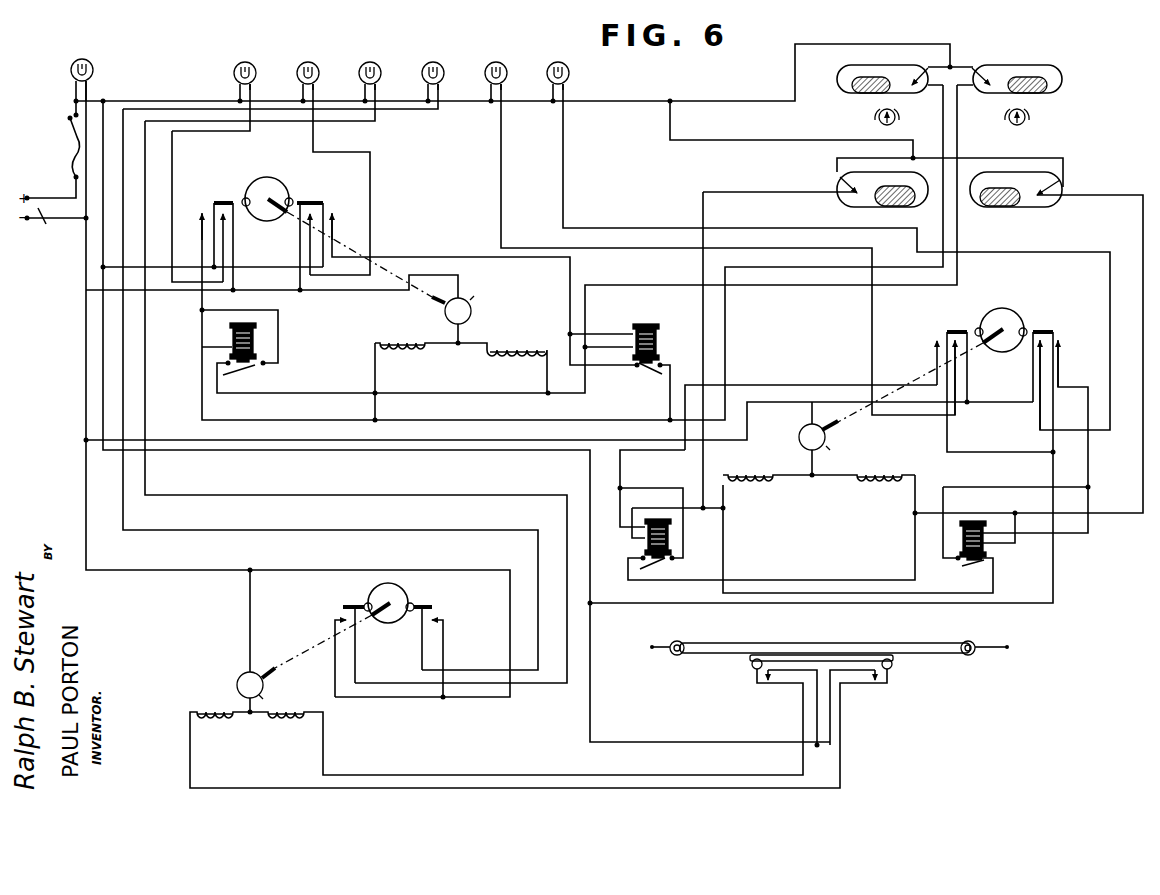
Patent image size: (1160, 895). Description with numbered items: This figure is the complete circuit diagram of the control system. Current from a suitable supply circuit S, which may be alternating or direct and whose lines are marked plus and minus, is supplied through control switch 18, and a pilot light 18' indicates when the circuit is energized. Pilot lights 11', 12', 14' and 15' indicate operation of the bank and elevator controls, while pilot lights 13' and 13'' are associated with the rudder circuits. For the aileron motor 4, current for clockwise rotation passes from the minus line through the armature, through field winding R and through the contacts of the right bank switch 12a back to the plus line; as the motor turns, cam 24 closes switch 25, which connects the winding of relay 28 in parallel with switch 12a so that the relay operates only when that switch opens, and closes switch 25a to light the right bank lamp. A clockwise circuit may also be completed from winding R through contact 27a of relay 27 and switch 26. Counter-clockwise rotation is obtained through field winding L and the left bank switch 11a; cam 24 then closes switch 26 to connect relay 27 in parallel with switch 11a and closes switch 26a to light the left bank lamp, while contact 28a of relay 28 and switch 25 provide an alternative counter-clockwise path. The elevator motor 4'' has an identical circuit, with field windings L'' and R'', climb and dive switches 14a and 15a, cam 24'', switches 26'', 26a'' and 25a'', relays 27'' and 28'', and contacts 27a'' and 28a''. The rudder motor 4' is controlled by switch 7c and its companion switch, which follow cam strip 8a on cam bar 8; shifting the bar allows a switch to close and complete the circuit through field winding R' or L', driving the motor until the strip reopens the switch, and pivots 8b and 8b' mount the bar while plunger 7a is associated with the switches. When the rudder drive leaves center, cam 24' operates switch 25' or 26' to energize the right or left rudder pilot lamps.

The pilot light 18' is at (90, 71).
The switch 18 is at (57, 147).
The supply circuit S is at (46, 229).
The pilot light 11' is at (233, 66).
The pilot light 12' is at (297, 66).
The pilot light 13' is at (382, 64).
The pilot light 13'' is at (421, 73).
The pilot light 14' is at (481, 73).
The pilot light 15' is at (540, 73).
The left bank switch 11a is at (838, 79).
The right bank switch 12a is at (1062, 80).
The climb switch 14a is at (838, 180).
The dive switch 15a is at (1063, 185).
The switch operating cam 24 is at (337, 226).
The switch 25 is at (322, 235).
The switch 26 is at (210, 235).
The switch 26a is at (238, 248).
The switch 25a is at (289, 244).
The aileron motor 4 is at (459, 310).
The field winding L is at (402, 333).
The field winding R is at (517, 339).
The control relay 27 is at (269, 342).
The relay contact 27a is at (259, 377).
The control relay 28 is at (658, 343).
The relay contact 28a is at (632, 381).
The switch operating cam 24'' is at (947, 363).
The switch 26'' is at (935, 352).
The switch 25' is at (751, 509).
The switch 26a'' is at (983, 378).
The switch 25a'' is at (1007, 385).
The elevator operating motor 4'' is at (801, 441).
The field winding L'' is at (752, 490).
The field winding R'' is at (879, 464).
The control relay 27'' is at (681, 538).
The relay contact 27a'' is at (666, 577).
The control relay 28'' is at (993, 544).
The relay contact 28a'' is at (952, 572).
The cam 24' is at (360, 623).
The switch 26' is at (337, 647).
The rudder motor 4' is at (240, 683).
The field winding L' is at (215, 735).
The field winding R' is at (286, 708).
The cam bar 8 is at (830, 645).
The cam strip 8a is at (867, 656).
The pivot 8b is at (667, 664).
The pivot 8b' is at (987, 665).
The switch 7c is at (760, 695).
The solenoid plunger 7a is at (881, 688).